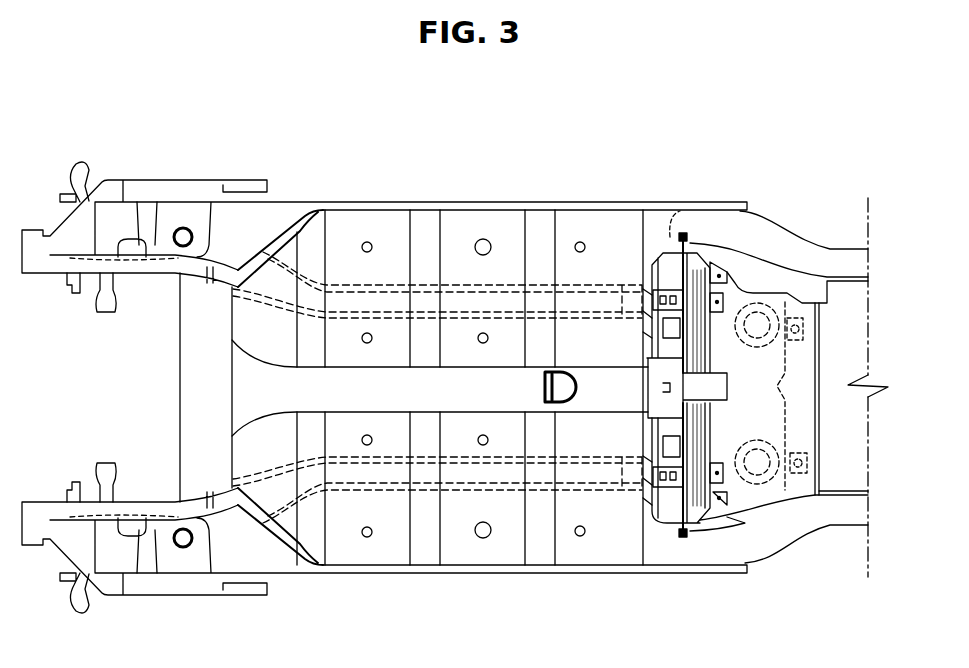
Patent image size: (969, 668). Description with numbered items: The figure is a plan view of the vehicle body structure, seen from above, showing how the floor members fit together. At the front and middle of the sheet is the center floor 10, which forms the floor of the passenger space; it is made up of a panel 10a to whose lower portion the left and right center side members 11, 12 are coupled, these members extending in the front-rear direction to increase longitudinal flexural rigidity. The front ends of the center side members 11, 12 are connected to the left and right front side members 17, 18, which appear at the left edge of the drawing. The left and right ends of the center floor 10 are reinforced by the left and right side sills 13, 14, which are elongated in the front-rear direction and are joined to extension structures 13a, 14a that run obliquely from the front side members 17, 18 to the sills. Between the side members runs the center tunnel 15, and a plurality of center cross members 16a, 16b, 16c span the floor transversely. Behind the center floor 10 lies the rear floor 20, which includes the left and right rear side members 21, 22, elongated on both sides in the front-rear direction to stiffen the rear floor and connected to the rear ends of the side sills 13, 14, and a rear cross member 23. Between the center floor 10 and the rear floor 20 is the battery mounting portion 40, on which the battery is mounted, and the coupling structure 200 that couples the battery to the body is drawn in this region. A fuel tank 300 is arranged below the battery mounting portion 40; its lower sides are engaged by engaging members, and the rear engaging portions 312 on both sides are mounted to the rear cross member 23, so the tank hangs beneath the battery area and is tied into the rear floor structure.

The center floor 10 is at (460, 247).
The panel 10a is at (509, 243).
The left center side member 11 is at (508, 490).
The right center side member 12 is at (605, 285).
The left side sill 13 is at (465, 570).
The extension structure 13a is at (248, 514).
The right side sill 14 is at (371, 205).
The extension structure 14a is at (265, 246).
The center tunnel 15 is at (388, 400).
The center cross member 16a is at (324, 536).
The center cross member 16b is at (438, 536).
The center cross member 16c is at (553, 536).
The left front side member 17 is at (142, 508).
The right front side member 18 is at (143, 262).
The rear floor 20 is at (840, 333).
The left rear side member 21 is at (782, 523).
The right rear side member 22 is at (781, 248).
The rear cross member 23 is at (804, 490).
The battery mounting portion 40 is at (683, 236).
The coupling structure 200 is at (657, 518).
The fuel tank 300 is at (775, 383).
The rear engaging portion 312 is at (808, 453).